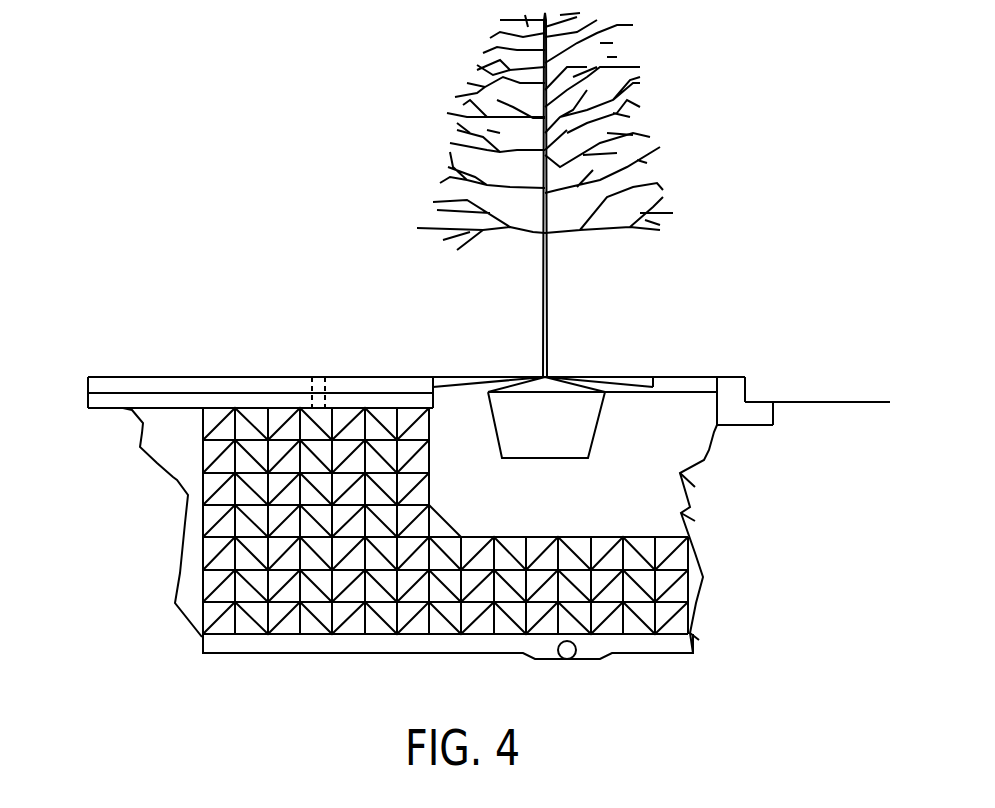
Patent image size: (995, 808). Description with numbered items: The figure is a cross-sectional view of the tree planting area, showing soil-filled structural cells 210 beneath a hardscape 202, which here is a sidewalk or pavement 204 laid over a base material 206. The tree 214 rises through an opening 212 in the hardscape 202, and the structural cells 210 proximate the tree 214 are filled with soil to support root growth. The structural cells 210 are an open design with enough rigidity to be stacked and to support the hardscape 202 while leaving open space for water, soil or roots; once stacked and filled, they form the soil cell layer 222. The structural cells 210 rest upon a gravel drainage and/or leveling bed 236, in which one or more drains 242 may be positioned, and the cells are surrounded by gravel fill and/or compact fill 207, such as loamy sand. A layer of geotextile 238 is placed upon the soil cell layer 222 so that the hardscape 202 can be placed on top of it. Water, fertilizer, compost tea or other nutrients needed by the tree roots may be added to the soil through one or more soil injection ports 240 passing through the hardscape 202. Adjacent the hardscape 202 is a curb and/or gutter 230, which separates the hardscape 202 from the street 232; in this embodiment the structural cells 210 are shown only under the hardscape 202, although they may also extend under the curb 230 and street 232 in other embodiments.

The hardscape 202 is at (80, 377).
The sidewalk or pavement 204 is at (228, 385).
The base material 206 is at (153, 398).
The gravel fill and/or compact fill 207 is at (165, 467).
The structural cells 210 is at (647, 587).
The opening 212 is at (587, 365).
The tree 214 is at (547, 285).
The soil cell layer 222 is at (212, 558).
The curb and/or gutter 230 is at (730, 392).
The street 232 is at (833, 400).
The gravel drainage and/or leveling bed 236 is at (203, 636).
The geotextile 238 is at (120, 410).
The soil injection ports 240 is at (323, 373).
The drains 242 is at (574, 662).